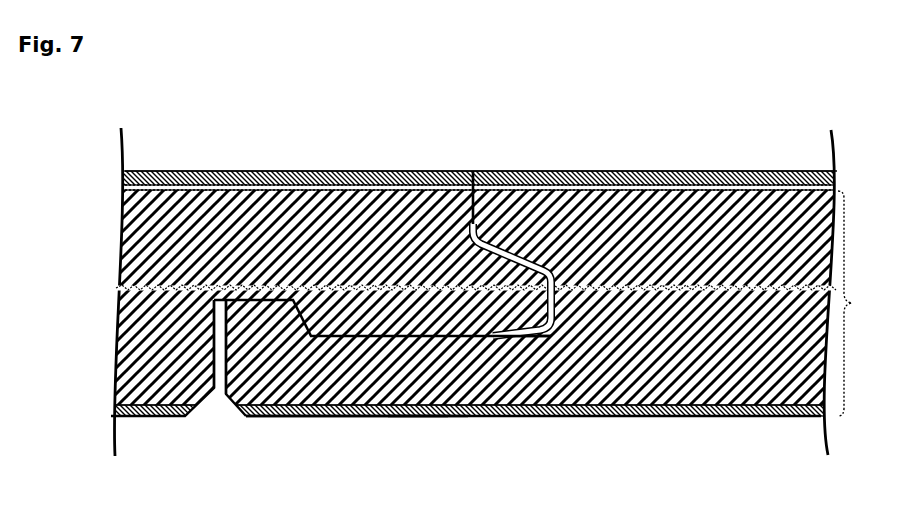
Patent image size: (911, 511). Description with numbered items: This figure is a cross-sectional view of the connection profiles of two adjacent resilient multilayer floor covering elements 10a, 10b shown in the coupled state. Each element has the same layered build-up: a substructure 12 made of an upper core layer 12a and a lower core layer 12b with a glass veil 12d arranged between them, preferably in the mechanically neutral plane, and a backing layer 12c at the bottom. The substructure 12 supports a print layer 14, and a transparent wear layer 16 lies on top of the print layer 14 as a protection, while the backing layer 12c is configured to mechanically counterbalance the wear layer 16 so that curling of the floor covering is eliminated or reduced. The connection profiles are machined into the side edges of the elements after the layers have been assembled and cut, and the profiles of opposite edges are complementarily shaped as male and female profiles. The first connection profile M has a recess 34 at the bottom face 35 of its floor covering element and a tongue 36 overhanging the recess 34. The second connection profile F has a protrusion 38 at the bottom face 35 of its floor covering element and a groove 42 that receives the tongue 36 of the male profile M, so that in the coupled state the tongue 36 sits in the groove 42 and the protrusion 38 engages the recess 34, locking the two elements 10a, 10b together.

The floor covering element 10a is at (212, 163).
The floor covering element 10b is at (685, 163).
The substructure 12 is at (870, 303).
The core layer 12a is at (117, 228).
The core layer 12b is at (108, 338).
The backing layer 12c is at (103, 402).
The glass veil 12d is at (110, 282).
The print layer 14 is at (117, 180).
The wear layer 16 is at (117, 170).
The recess 34 is at (210, 385).
The bottom face 35 is at (411, 429).
The tongue 36 is at (540, 320).
The protrusion 38 is at (348, 378).
The groove 42 is at (525, 330).
The first connection profile M is at (386, 125).
The second connection profile F is at (553, 126).